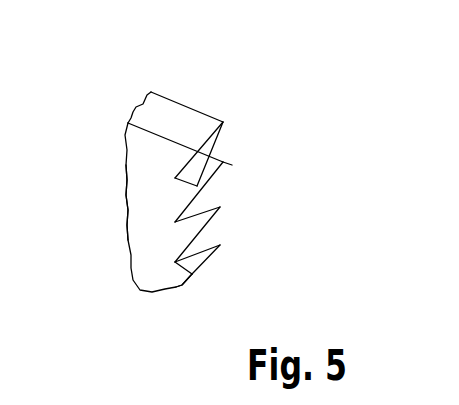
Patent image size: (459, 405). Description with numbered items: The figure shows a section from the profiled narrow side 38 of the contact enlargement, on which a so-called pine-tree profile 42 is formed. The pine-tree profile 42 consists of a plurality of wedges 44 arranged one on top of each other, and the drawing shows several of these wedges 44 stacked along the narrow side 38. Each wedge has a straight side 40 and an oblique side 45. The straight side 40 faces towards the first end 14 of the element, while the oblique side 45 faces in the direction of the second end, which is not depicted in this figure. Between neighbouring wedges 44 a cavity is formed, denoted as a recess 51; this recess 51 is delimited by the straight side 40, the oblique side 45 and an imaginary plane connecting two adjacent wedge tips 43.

The first end 14 is at (169, 113).
The narrow side 38 is at (230, 141).
The straight side 40 is at (186, 222).
The pine-tree profile 42 is at (224, 227).
The wedge tips 43 is at (222, 167).
The wedges 44 is at (221, 205).
The oblique side 45 is at (188, 283).
The recess 51 is at (216, 158).